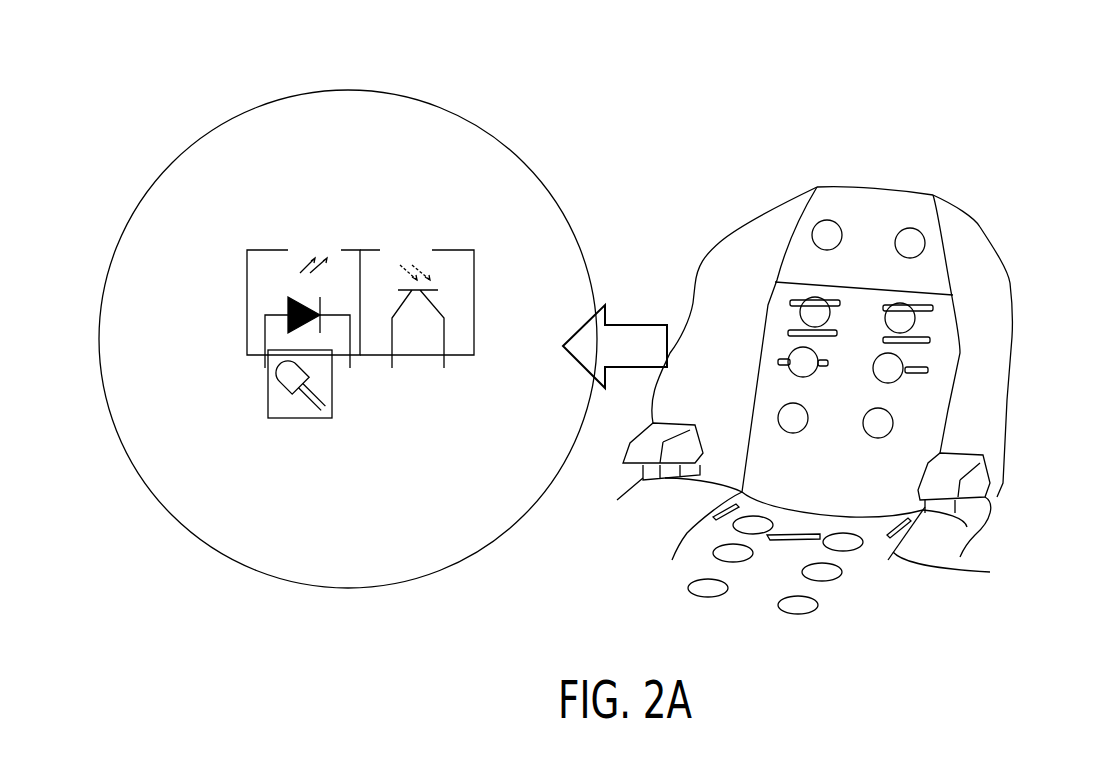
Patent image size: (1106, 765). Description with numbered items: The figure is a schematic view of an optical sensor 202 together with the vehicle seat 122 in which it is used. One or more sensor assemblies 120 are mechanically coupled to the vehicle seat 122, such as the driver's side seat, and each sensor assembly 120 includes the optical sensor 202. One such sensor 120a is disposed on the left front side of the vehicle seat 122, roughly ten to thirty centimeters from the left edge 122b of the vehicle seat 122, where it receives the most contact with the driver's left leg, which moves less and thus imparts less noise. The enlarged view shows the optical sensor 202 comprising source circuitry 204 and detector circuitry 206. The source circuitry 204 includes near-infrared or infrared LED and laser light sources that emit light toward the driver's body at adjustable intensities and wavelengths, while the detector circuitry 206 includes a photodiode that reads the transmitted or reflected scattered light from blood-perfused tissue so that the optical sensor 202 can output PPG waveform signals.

The optical sensor 202 is at (375, 90).
The source circuitry 204 is at (237, 178).
The detector circuitry 206 is at (475, 183).
The vehicle seat 122 is at (937, 357).
The left edge of the vehicle seat 122b is at (980, 545).
The sensor assembly 120 is at (990, 572).
The sensor 120a is at (828, 582).